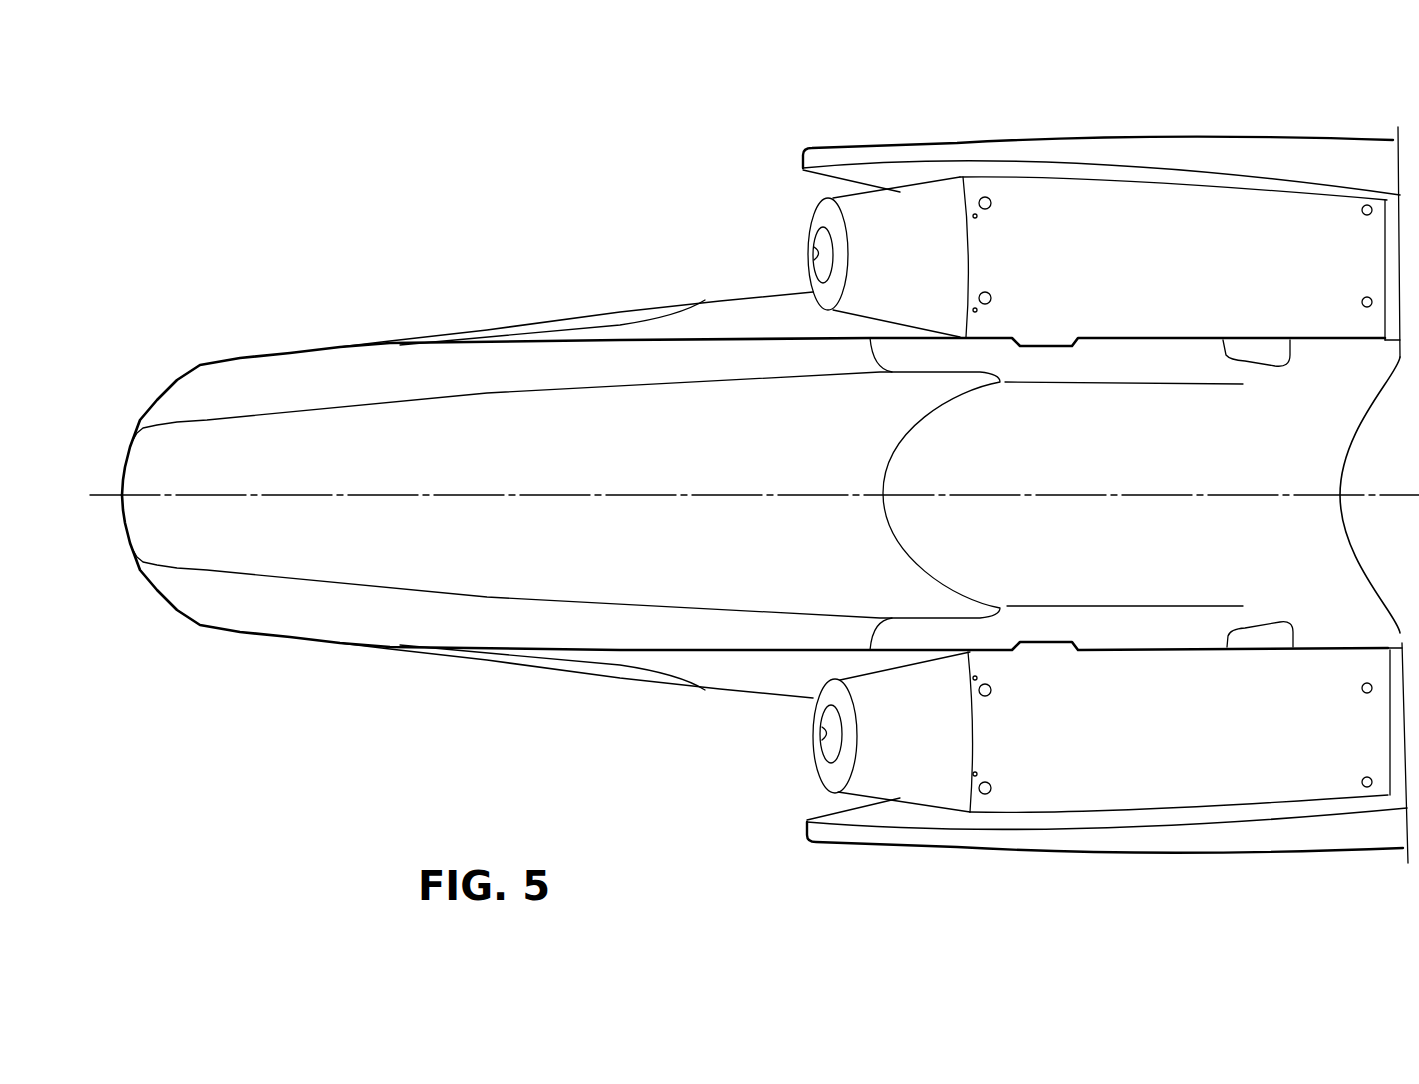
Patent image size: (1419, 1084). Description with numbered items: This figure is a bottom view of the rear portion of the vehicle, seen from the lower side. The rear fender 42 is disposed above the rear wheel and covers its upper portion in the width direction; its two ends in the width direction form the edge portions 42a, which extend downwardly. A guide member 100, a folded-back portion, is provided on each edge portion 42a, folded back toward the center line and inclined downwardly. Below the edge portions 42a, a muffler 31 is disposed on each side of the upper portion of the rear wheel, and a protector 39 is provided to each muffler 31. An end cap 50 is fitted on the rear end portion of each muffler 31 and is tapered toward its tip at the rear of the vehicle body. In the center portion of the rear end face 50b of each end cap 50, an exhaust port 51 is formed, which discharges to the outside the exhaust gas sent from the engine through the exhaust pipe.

The rear fender 42 is at (257, 605).
The edge portion 42a is at (747, 295).
The guide member 100 is at (735, 323).
The end cap 50 is at (898, 217).
The rear end face 50b is at (827, 215).
The exhaust port 51 is at (820, 252).
The muffler 31 is at (1122, 213).
The protector 39 is at (1272, 155).